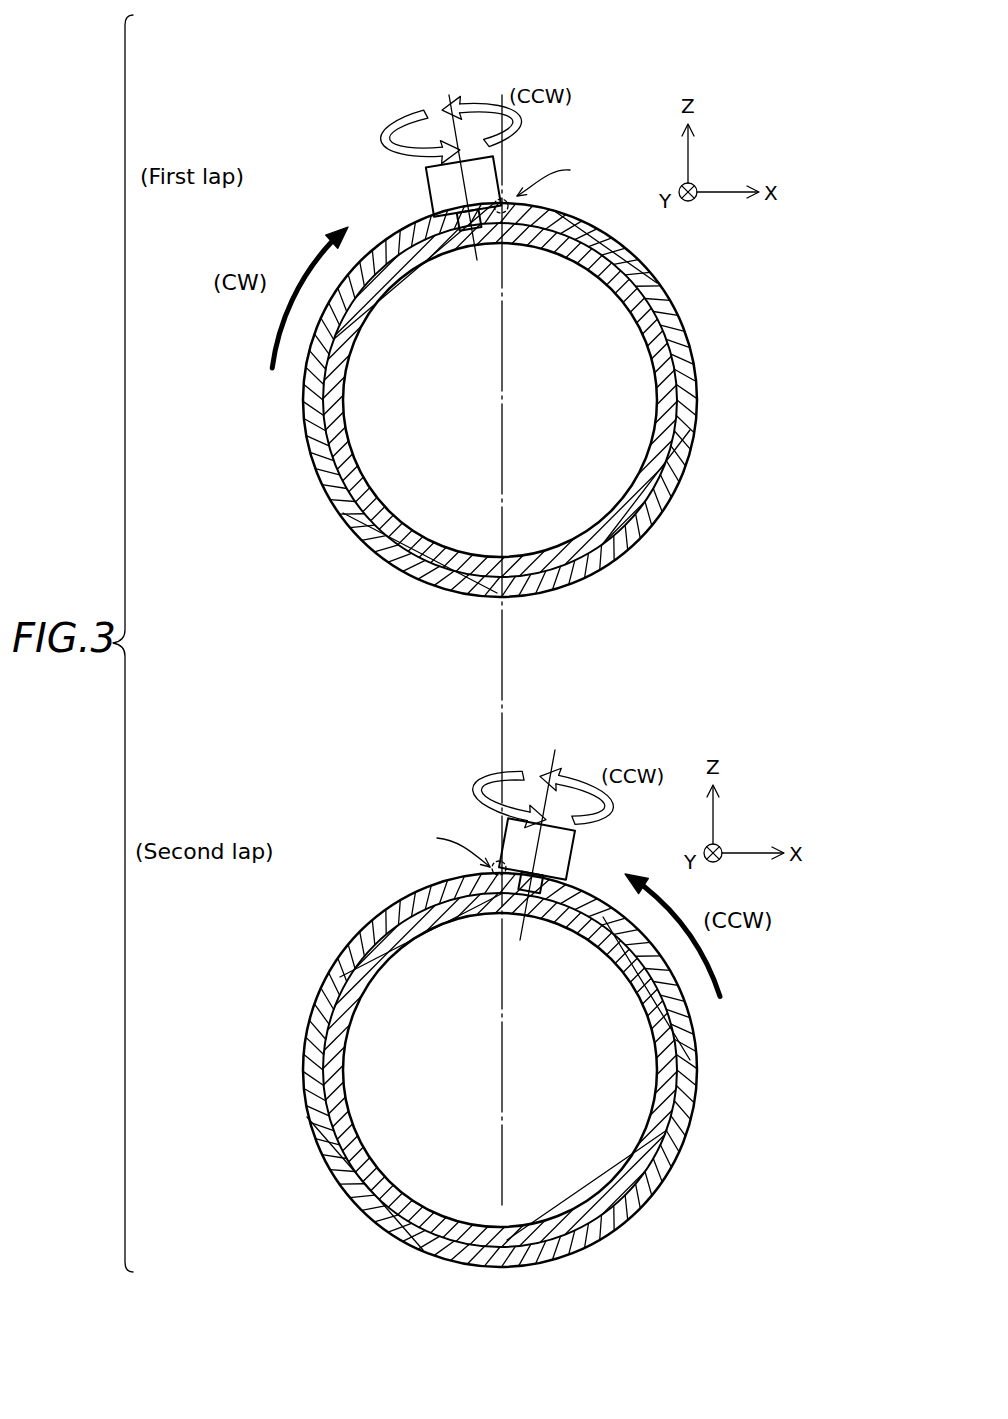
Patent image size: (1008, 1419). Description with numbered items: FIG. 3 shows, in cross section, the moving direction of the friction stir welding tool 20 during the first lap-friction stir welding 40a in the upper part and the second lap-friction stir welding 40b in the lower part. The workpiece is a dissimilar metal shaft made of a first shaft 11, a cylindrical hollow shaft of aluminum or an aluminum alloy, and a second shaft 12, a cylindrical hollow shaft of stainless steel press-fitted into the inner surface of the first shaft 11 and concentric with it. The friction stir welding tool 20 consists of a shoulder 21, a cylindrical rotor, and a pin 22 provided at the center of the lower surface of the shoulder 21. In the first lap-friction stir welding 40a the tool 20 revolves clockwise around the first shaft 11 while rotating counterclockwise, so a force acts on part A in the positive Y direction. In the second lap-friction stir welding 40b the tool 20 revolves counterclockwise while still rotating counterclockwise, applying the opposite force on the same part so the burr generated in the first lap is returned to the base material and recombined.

The first shaft 11 is at (310, 458).
The second shaft 12 is at (358, 448).
The friction stir welding tool 20 is at (483, 549).
The shoulder 21 is at (490, 188).
The pin 22 is at (447, 220).
The first lap-friction stir welding 40a is at (487, 63).
The second lap-friction stir welding 40b is at (487, 720).